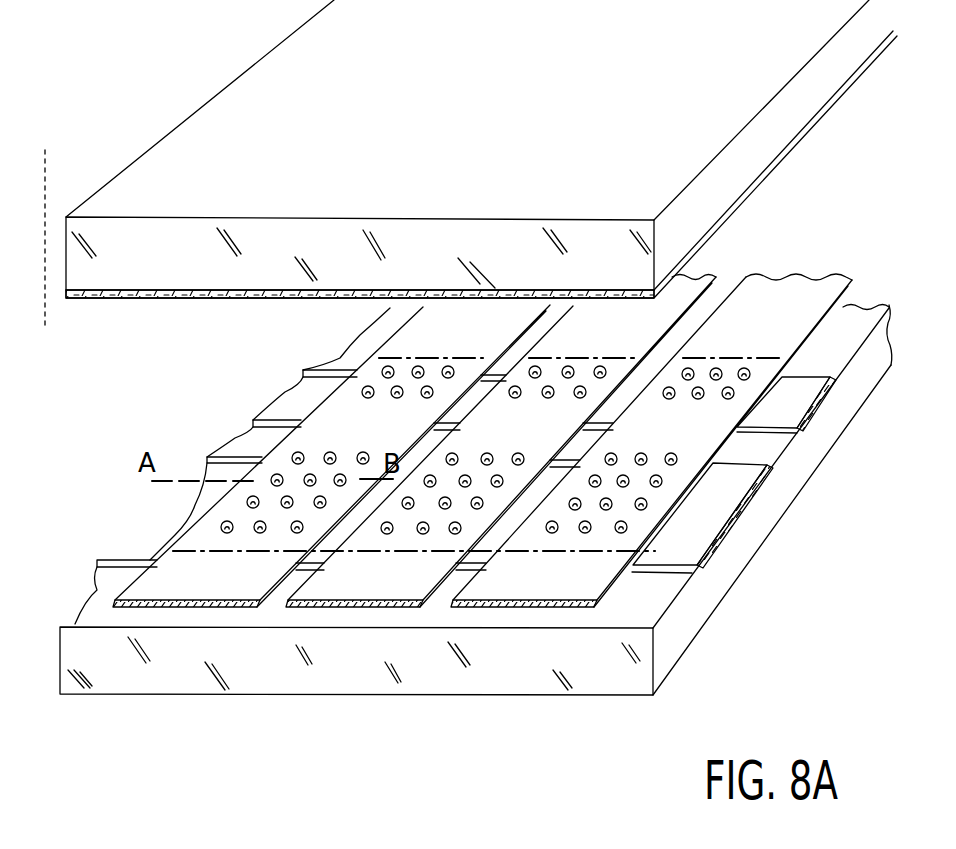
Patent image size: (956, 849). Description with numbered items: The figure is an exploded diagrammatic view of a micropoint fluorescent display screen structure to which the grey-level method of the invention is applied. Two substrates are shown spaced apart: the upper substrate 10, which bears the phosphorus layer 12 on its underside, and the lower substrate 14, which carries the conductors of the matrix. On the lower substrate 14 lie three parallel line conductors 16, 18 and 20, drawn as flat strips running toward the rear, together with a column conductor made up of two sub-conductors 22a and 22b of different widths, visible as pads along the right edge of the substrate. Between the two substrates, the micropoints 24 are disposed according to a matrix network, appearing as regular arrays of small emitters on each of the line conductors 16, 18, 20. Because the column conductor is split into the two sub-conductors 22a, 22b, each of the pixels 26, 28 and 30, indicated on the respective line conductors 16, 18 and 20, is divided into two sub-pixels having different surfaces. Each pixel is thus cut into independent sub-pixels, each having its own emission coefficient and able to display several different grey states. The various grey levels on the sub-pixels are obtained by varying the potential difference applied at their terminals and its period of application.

The upper substrate 10 is at (237, 110).
The phosphorus layer 12 is at (142, 292).
The lower substrate 14 is at (128, 665).
The line conductor 16 is at (233, 605).
The line conductor 18 is at (377, 605).
The line conductor 20 is at (537, 605).
The sub-conductor 22a is at (790, 415).
The sub-conductor 22b is at (686, 545).
The micropoints 24 is at (330, 452).
The pixel 26 is at (473, 320).
The pixel 28 is at (625, 325).
The pixel 30 is at (769, 322).